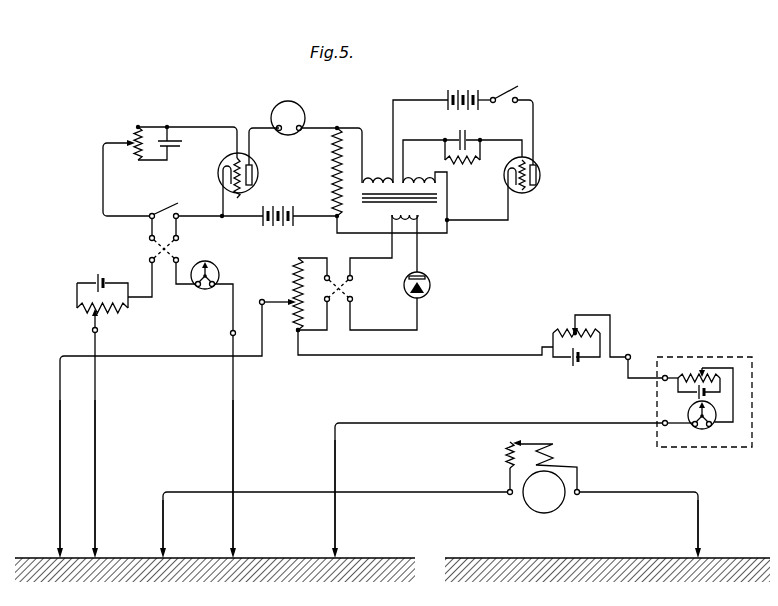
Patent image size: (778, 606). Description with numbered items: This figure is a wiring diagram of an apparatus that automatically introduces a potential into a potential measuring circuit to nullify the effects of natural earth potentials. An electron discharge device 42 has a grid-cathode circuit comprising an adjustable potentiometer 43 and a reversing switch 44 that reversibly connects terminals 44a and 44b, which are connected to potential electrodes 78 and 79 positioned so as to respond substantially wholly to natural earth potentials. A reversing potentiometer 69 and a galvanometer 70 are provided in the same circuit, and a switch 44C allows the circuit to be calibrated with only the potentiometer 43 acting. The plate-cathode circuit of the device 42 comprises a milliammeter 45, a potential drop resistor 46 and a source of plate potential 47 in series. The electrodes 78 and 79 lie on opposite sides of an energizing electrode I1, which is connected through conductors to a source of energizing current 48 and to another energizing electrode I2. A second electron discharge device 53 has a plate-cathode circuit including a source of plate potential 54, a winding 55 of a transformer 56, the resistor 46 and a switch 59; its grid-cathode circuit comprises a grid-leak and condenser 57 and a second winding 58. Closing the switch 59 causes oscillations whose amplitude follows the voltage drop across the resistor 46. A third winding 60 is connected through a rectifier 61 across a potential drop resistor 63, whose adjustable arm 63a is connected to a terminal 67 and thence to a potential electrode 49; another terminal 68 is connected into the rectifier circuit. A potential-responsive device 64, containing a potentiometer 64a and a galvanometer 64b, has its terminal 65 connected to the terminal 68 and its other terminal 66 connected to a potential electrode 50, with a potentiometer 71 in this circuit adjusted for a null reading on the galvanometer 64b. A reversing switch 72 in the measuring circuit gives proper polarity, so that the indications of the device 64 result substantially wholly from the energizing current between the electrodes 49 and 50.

The electron discharge device 42 is at (258, 173).
The adjustable potentiometer 43 is at (140, 161).
The reversing switch 44 is at (170, 250).
The switch 44C is at (170, 202).
The terminal 44a is at (98, 331).
The terminal 44b is at (230, 333).
The milliammeter 45 is at (303, 121).
The potential drop resistor 46 is at (328, 168).
The source of plate potential 47 is at (288, 230).
The source of energizing current 48 is at (552, 504).
The potential electrode 49 is at (58, 512).
The potential electrode 50 is at (337, 540).
The second electron discharge device 53 is at (544, 172).
The source of plate potential 54 is at (468, 96).
The winding 55 is at (371, 178).
The transformer 56 is at (378, 210).
The grid-leak and condenser 57 is at (470, 140).
The second winding 58 is at (413, 178).
The switch 59 is at (513, 84).
The third winding 60 is at (416, 217).
The rectifier 61 is at (434, 278).
The potential drop resistor 63 is at (296, 275).
The adjustable arm 63a is at (297, 328).
The potential-responsive device 64 is at (740, 357).
The potentiometer 64a is at (700, 389).
The galvanometer 64b is at (706, 428).
The terminal 65 is at (665, 381).
The terminal 66 is at (665, 420).
The terminal 67 is at (268, 293).
The terminal 68 is at (631, 355).
The reversing potentiometer 69 is at (126, 306).
The galvanometer 70 is at (214, 268).
The potentiometer 71 is at (580, 340).
The reversing switch 72 is at (342, 292).
The potential electrode 78 is at (98, 535).
The potential electrode 79 is at (236, 533).
The energizing electrode I1 is at (167, 535).
The energizing electrode I2 is at (701, 537).